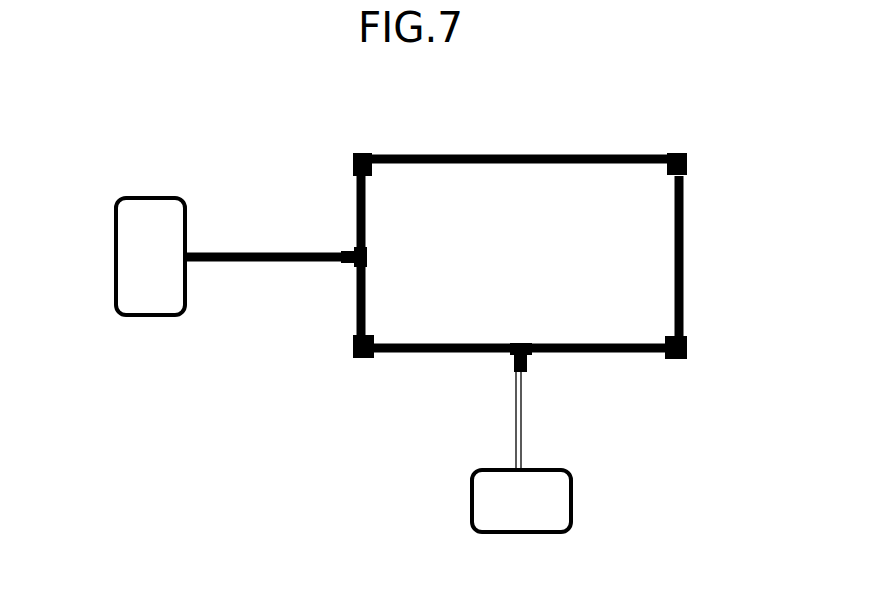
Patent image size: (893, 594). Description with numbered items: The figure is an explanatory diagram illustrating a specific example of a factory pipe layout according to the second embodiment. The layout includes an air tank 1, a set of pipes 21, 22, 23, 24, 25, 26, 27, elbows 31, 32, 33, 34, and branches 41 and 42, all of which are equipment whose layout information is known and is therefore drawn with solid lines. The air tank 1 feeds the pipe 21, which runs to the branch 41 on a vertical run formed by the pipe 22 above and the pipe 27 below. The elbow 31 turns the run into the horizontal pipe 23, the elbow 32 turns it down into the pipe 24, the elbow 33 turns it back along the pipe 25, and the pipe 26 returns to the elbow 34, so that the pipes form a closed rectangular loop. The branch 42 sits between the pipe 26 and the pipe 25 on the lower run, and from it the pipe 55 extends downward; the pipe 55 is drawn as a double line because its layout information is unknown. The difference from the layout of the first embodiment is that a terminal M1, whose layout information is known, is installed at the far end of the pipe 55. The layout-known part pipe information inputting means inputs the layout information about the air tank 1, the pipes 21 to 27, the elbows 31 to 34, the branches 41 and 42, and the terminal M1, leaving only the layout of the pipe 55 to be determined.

The air tank 1 is at (115, 200).
The pipe 21 is at (248, 255).
The pipe 22 is at (366, 222).
The pipe 23 is at (525, 151).
The pipe 24 is at (683, 258).
The pipe 25 is at (585, 348).
The pipe 26 is at (430, 347).
The pipe 27 is at (363, 308).
The elbow 31 is at (365, 151).
The elbow 32 is at (685, 151).
The elbow 33 is at (688, 345).
The elbow 34 is at (352, 360).
The branch 41 is at (368, 262).
The branch 42 is at (518, 345).
The pipe 55 is at (522, 402).
The terminal M1 is at (570, 500).